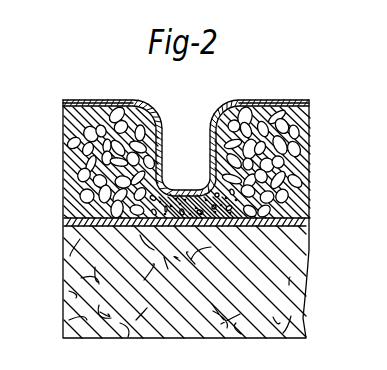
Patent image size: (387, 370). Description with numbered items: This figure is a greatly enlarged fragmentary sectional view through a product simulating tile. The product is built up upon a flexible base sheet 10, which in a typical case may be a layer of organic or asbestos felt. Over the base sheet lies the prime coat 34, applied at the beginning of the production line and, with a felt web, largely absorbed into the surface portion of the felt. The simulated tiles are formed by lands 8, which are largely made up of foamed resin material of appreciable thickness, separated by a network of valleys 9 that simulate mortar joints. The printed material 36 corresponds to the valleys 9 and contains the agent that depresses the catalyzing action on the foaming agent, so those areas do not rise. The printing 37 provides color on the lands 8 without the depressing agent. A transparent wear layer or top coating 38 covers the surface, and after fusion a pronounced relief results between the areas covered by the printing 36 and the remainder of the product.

The flexible base sheet 10 is at (302, 269).
The prime coat 34 is at (67, 223).
The printed material 36 is at (182, 187).
The printing 37 is at (63, 106).
The top coating 38 is at (86, 103).
The lands 8 is at (125, 86).
The valleys 9 is at (206, 104).